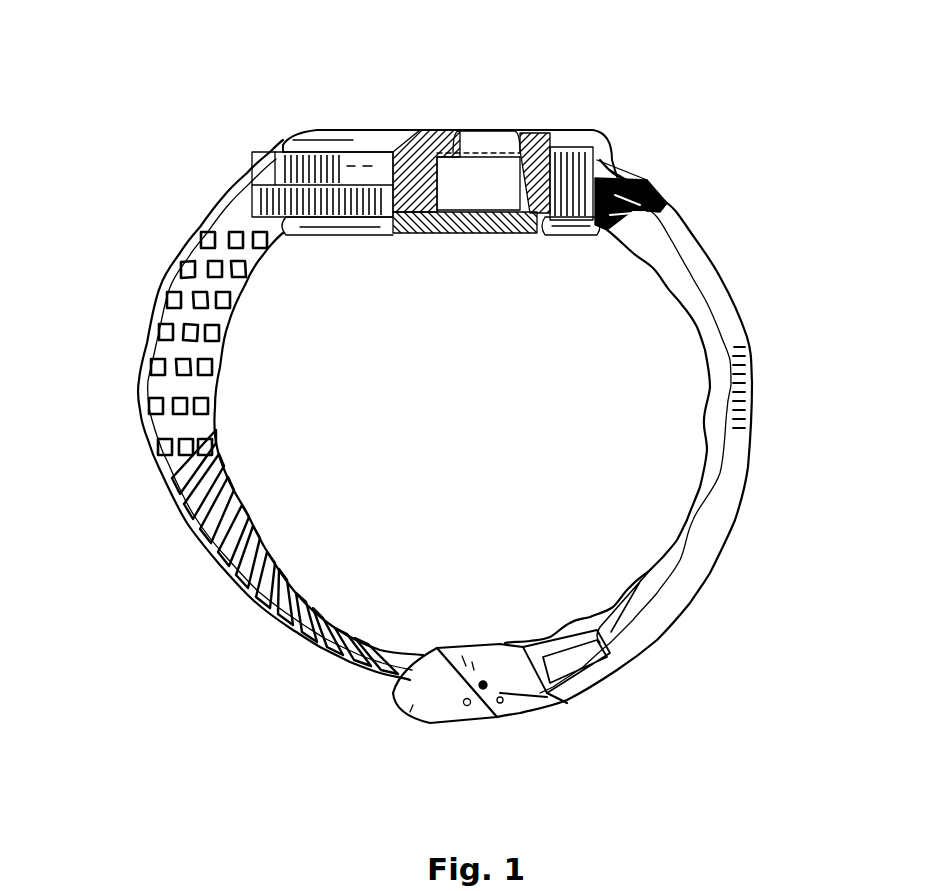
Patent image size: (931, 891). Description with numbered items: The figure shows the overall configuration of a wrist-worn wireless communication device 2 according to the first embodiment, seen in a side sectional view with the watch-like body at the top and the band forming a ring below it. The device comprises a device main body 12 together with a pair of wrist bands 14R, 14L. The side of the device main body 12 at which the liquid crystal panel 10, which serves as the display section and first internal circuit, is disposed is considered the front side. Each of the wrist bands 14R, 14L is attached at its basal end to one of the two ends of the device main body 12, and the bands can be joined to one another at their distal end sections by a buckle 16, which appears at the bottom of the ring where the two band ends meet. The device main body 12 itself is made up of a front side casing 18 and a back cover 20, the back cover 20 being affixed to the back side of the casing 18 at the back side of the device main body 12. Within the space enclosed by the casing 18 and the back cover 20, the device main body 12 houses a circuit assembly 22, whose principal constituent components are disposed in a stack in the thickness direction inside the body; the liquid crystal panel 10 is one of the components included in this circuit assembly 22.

The wrist-worn wireless communication device 2 is at (668, 156).
The liquid crystal panel 10 is at (463, 128).
The device main body 12 is at (363, 132).
The wrist band 14R is at (147, 405).
The wrist band 14L is at (730, 445).
The buckle 16 is at (457, 707).
The front side casing 18 is at (405, 212).
The back cover 20 is at (497, 237).
The circuit assembly 22 is at (488, 177).